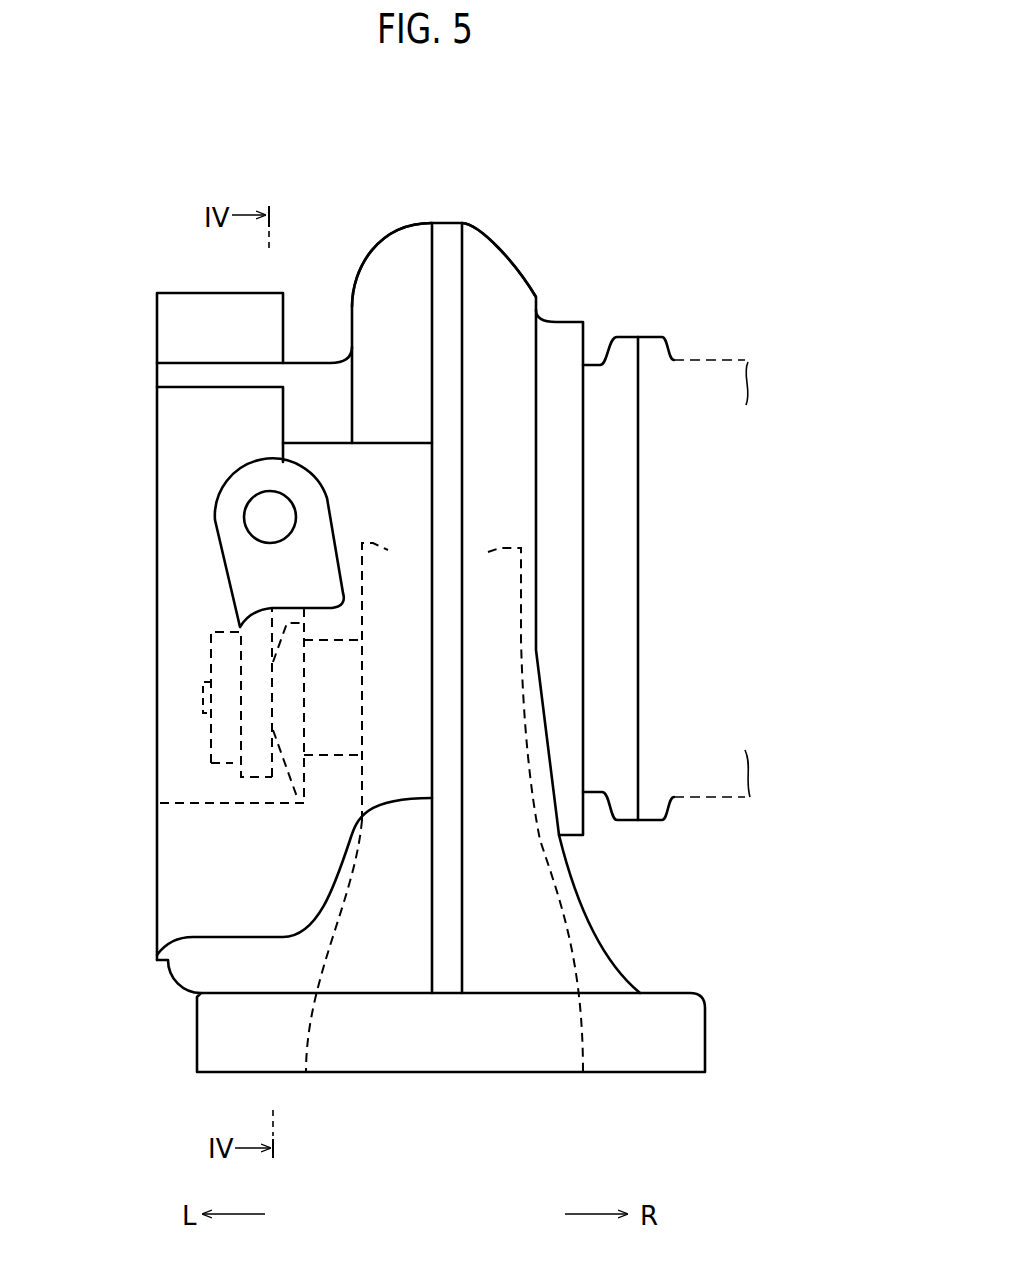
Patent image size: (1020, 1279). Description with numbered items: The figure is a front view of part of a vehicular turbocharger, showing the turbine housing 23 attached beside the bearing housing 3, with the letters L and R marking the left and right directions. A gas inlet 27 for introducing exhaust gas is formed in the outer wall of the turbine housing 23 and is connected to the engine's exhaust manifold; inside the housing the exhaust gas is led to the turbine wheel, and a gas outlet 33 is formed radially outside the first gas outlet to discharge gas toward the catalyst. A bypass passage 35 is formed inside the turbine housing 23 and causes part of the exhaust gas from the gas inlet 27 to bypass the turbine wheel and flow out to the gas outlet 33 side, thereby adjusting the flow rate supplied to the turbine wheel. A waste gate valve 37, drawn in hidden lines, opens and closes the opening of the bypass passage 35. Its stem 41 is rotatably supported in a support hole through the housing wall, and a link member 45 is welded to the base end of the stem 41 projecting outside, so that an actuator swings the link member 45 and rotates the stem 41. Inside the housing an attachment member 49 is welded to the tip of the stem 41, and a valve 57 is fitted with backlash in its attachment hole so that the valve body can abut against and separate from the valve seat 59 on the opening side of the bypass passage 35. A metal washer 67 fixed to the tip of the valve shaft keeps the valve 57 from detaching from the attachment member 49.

The bearing housing 3 is at (707, 360).
The turbine housing 23 is at (495, 240).
The gas inlet 27 is at (572, 960).
The gas outlet 33 is at (187, 803).
The bypass passage 35 is at (338, 752).
The waste gate valve 37 is at (190, 650).
The stem 41 is at (257, 523).
The link member 45 is at (227, 573).
The attachment member 49 is at (238, 780).
The valve 57 is at (277, 778).
The valve seat 59 is at (297, 792).
The metal washer 67 is at (213, 740).